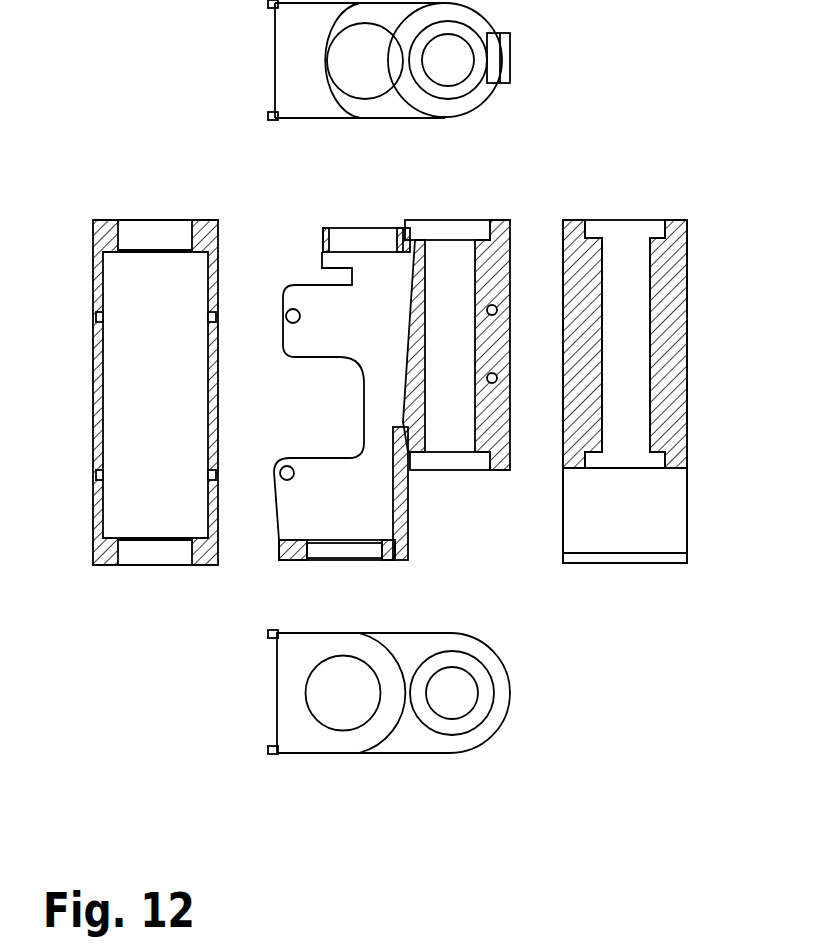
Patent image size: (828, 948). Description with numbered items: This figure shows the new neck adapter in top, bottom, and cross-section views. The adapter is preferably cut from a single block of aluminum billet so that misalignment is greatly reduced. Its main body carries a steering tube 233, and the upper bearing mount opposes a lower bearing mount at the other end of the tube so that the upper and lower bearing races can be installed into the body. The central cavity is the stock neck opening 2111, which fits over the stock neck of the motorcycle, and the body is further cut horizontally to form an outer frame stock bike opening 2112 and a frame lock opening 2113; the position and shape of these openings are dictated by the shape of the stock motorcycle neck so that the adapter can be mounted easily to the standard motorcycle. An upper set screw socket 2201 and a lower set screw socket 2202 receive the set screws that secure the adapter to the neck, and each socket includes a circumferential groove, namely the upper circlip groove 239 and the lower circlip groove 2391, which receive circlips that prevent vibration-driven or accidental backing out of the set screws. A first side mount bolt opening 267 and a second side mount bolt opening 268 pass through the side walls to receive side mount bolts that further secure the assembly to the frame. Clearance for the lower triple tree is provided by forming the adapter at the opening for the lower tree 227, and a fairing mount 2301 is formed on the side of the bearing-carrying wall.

The upper circlip groove 239 is at (325, 232).
The upper set screw socket 2201 is at (397, 243).
The fairing mount 2301 is at (500, 282).
The steering tube 233 is at (602, 268).
The frame lock opening 2113 is at (348, 285).
The first side mount bolt opening 267 is at (292, 311).
The outer frame stock bike opening 2112 is at (320, 357).
The stock neck opening 2111 is at (392, 458).
The second side mount bolt opening 268 is at (283, 478).
The lower circlip groove 2391 is at (293, 560).
The lower set screw socket 2202 is at (377, 547).
The opening for lower tree 227 is at (407, 512).